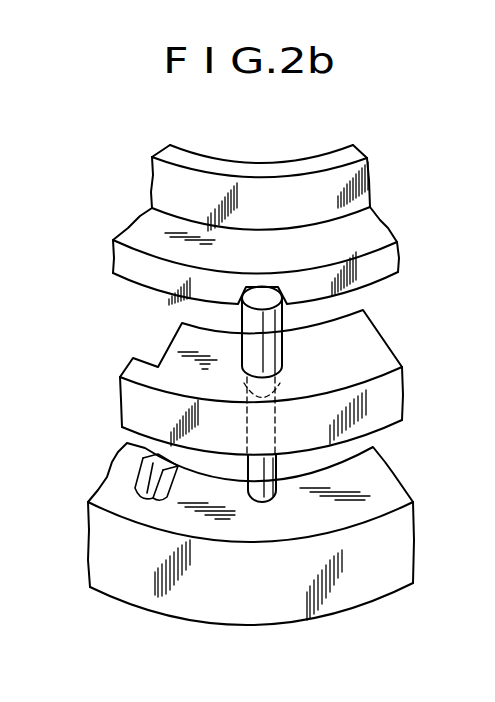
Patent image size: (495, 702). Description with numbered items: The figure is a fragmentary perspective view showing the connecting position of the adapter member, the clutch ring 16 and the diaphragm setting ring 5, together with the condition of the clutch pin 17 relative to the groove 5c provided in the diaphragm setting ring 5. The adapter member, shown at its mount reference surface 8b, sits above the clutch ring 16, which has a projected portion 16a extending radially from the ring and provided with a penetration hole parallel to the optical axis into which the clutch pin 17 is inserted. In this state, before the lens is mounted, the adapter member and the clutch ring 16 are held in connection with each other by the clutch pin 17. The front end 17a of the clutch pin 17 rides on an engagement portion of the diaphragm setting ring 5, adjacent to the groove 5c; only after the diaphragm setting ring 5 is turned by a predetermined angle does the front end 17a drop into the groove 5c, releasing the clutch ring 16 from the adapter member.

The mount reference surface 8b is at (372, 230).
The clutch pin 17 is at (252, 330).
The projected portion 16a is at (300, 338).
The clutch ring 16 is at (278, 374).
The front end of clutch pin 17a is at (268, 492).
The diaphragm setting ring 5 is at (239, 534).
The groove 5c is at (127, 473).